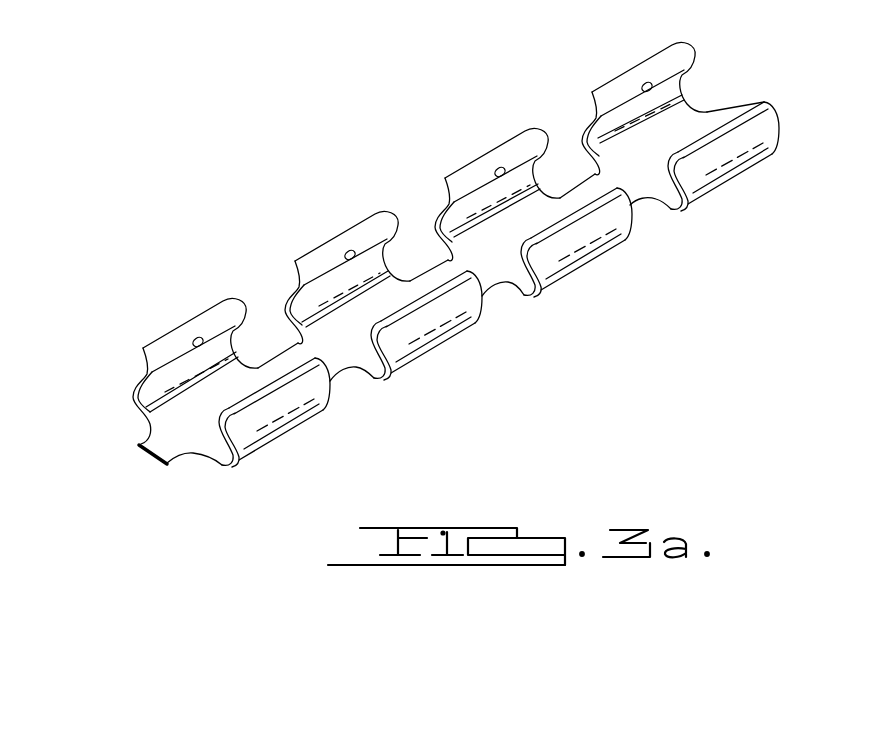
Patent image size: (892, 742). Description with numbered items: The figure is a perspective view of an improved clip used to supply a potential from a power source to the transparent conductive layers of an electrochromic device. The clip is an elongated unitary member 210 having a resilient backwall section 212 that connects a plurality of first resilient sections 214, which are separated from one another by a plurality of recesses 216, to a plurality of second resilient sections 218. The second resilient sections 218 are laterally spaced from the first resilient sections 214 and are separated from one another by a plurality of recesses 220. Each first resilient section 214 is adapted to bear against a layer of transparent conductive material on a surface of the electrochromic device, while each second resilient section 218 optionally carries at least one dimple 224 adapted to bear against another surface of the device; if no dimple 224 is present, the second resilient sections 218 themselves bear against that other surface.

The elongated unitary member 210 is at (146, 196).
The resilient backwall section 212 is at (147, 460).
The first resilient section 214 is at (262, 428).
The recess 216 is at (364, 396).
The second resilient section 218 is at (157, 385).
The recess 220 is at (257, 294).
The dimple 224 is at (194, 339).